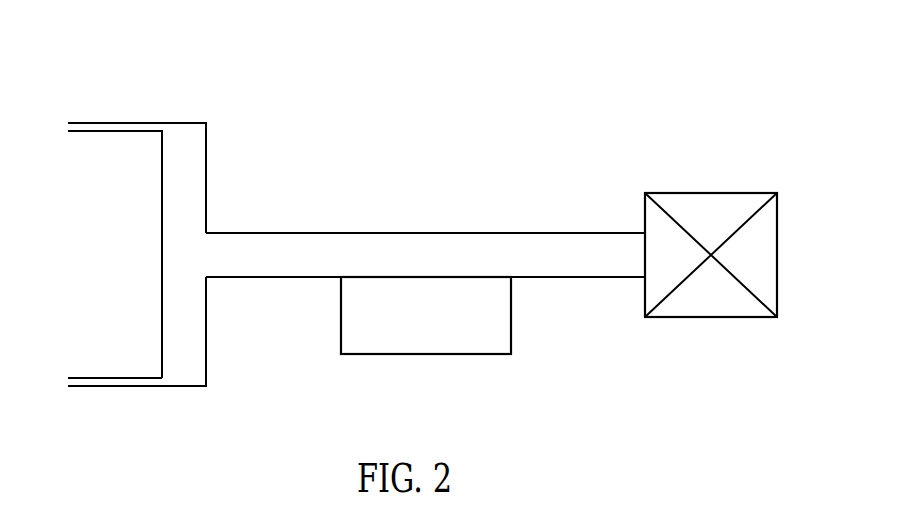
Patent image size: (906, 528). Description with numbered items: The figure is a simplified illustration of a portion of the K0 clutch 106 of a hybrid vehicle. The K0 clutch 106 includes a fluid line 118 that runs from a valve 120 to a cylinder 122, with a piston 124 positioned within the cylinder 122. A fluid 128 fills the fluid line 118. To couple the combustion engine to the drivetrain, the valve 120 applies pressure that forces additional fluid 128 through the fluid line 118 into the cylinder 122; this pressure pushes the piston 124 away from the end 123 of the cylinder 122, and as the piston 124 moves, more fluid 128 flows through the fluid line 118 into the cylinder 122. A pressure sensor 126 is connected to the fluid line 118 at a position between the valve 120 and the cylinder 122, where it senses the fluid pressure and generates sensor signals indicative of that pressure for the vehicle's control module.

The K0 clutch 106 is at (686, 95).
The fluid line 118 is at (364, 232).
The valve 120 is at (735, 192).
The cylinder 122 is at (173, 123).
The end of the cylinder 123 is at (207, 180).
The piston 124 is at (100, 380).
The pressure sensor 126 is at (438, 355).
The fluid 128 is at (278, 263).